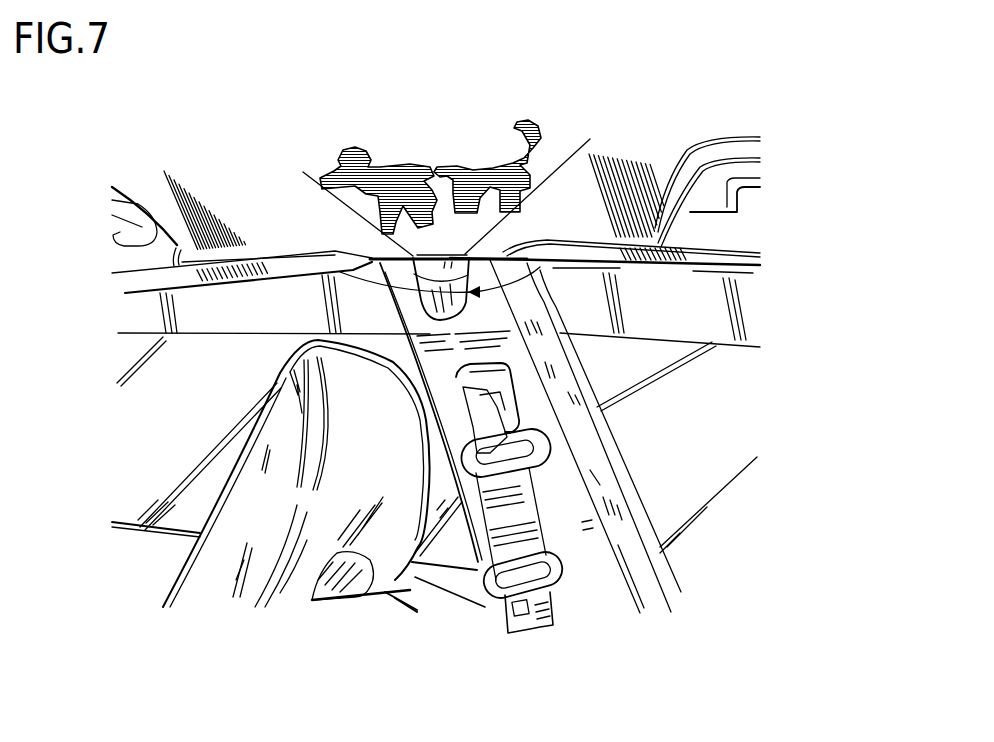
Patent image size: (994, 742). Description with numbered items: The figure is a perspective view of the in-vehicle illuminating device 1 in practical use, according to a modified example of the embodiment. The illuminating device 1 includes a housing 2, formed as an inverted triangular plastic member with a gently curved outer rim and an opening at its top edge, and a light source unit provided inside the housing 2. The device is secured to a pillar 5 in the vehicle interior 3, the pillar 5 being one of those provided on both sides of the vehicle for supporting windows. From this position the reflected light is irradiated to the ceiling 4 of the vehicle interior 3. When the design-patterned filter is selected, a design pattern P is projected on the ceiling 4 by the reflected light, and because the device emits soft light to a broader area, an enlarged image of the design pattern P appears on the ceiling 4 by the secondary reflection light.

The design pattern P is at (450, 147).
The in-vehicle illuminating device 1 is at (550, 266).
The housing 2 is at (358, 263).
The vehicle interior 3 is at (166, 413).
The ceiling 4 is at (240, 182).
The pillar 5 is at (567, 468).